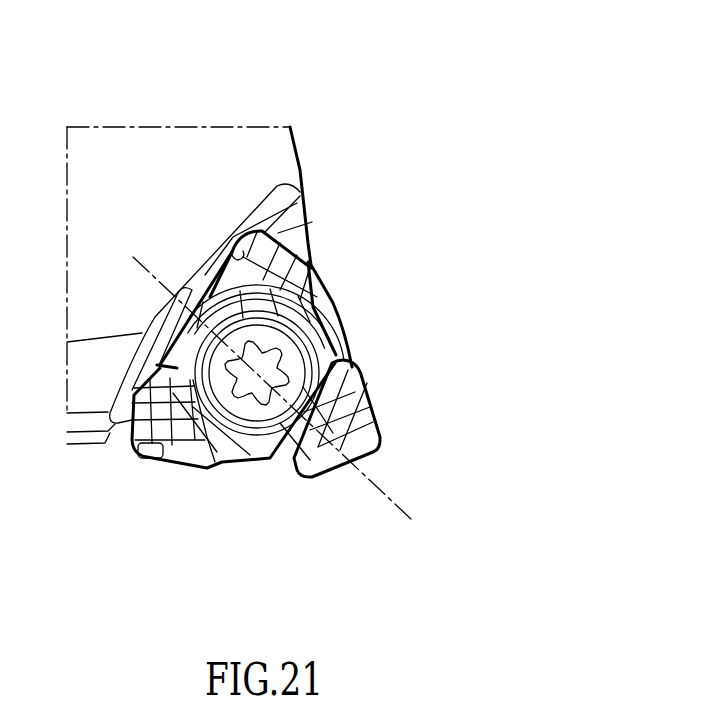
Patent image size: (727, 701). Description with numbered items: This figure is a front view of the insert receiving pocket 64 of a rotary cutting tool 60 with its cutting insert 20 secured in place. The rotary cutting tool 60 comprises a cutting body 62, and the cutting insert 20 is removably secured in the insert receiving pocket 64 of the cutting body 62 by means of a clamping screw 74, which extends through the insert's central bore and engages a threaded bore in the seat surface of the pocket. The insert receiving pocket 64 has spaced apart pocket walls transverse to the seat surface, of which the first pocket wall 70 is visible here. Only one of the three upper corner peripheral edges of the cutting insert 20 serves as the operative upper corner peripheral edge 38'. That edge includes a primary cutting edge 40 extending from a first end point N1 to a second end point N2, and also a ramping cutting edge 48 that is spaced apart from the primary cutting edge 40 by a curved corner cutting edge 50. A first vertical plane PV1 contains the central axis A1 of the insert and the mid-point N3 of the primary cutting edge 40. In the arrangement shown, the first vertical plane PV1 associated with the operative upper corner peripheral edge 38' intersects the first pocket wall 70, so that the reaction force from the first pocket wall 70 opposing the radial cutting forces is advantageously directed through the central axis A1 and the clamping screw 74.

The rotary cutting tool 60 is at (222, 100).
The cutting body 62 is at (212, 193).
The insert receiving pocket 64 is at (283, 222).
The clamping screw 74 is at (300, 307).
The central axis A1 is at (263, 361).
The cutting insert 20 is at (335, 371).
The operative upper corner peripheral edge 38' is at (391, 407).
The primary cutting edge 40 is at (372, 455).
The first end point N1 is at (325, 477).
The second end point N2 is at (378, 446).
The mid-point N3 is at (347, 463).
The ramping cutting edge 48 is at (300, 477).
The curved corner cutting edge 50 is at (298, 480).
The first pocket wall 70 is at (192, 395).
The first vertical plane PV1 is at (274, 391).